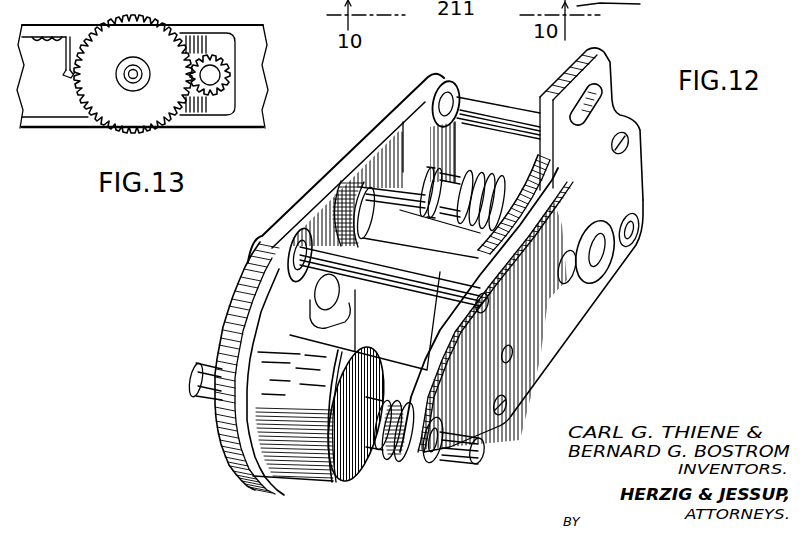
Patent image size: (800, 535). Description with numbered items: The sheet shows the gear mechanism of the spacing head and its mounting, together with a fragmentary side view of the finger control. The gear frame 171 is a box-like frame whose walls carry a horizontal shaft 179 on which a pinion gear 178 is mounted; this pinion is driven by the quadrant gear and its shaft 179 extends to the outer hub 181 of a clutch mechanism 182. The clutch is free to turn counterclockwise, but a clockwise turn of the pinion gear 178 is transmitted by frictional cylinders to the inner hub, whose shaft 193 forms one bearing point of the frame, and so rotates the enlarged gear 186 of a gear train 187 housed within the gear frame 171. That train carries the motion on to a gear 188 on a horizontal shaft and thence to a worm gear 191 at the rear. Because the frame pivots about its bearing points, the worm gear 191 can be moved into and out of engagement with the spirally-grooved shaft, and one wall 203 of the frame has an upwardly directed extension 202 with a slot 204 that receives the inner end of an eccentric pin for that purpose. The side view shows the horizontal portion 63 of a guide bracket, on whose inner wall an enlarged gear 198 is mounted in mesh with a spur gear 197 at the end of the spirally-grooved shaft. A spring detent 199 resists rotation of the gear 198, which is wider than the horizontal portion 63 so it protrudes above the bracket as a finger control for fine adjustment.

In FIG. 13, the horizontal portion 63 is at (247, 50).
In FIG. 13, the spring detent 199 is at (68, 68).
In FIG. 13, the spur gear 197 is at (231, 80).
In FIG. 13, the enlarged gear 198 is at (158, 127).
In FIG. 12, the enlarged gear 198 is at (519, 218).
In FIG. 12, the gear frame 171 is at (572, 320).
In FIG. 12, the upwardly directed extension 202 is at (600, 72).
In FIG. 12, the wall 203 is at (640, 182).
In FIG. 12, the slot 204 is at (598, 98).
In FIG. 12, the worm gear 191 is at (468, 174).
In FIG. 12, the gear train 187 is at (250, 304).
In FIG. 12, the enlarged gear 186 is at (235, 368).
In FIG. 12, the gear 188 is at (345, 322).
In FIG. 12, the shaft 193 is at (206, 390).
In FIG. 12, the clutch mechanism 182 is at (297, 473).
In FIG. 12, the outer hub 181 is at (333, 480).
In FIG. 12, the pinion gear 178 is at (418, 457).
In FIG. 12, the shaft 179 is at (458, 447).